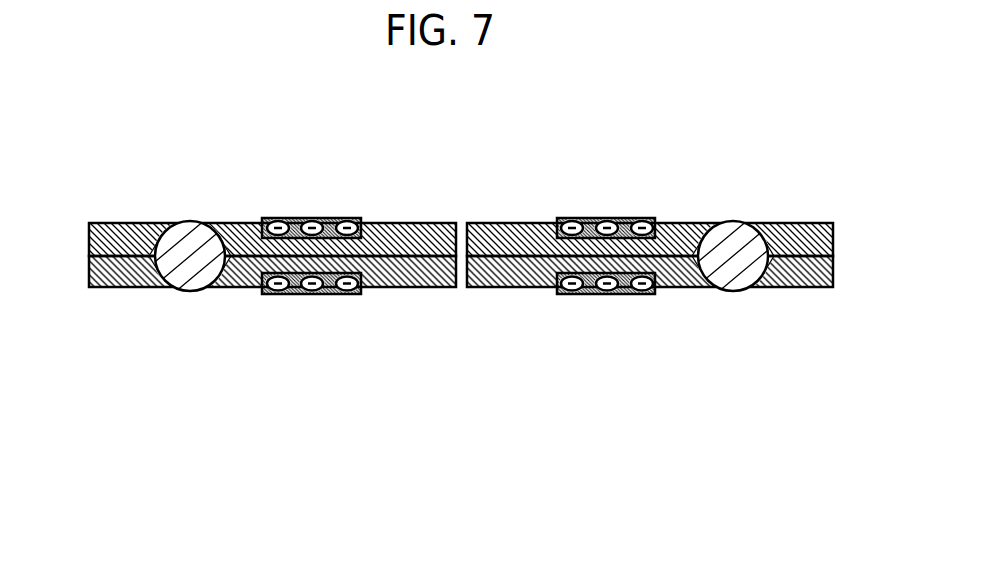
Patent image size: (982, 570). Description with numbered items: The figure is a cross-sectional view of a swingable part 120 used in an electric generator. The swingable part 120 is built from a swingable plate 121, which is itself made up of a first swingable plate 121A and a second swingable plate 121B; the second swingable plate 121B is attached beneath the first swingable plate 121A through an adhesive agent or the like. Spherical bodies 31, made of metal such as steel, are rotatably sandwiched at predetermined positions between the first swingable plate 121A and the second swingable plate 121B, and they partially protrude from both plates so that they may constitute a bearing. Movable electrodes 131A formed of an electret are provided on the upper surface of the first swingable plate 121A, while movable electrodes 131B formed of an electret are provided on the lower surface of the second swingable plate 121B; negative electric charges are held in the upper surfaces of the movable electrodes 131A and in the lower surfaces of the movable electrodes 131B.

The swingable part 120 is at (463, 191).
The swingable plate 121 is at (461, 191).
The first swingable plate 121A is at (527, 228).
The second swingable plate 121B is at (600, 157).
The movable electrodes 131A is at (327, 217).
The movable electrodes 131B is at (332, 293).
The spherical bodies 31 is at (193, 276).